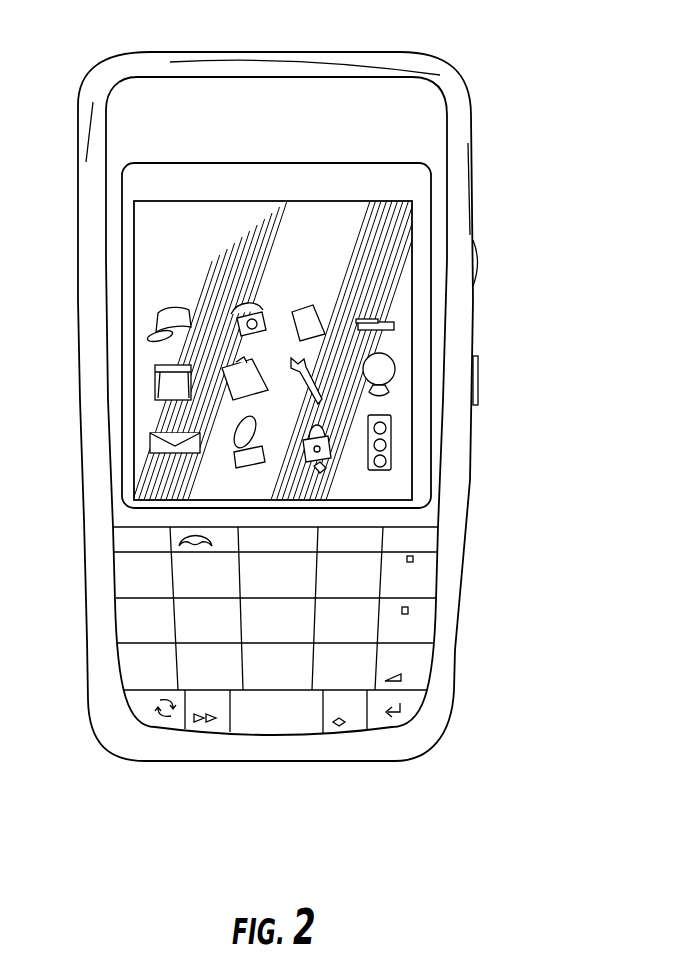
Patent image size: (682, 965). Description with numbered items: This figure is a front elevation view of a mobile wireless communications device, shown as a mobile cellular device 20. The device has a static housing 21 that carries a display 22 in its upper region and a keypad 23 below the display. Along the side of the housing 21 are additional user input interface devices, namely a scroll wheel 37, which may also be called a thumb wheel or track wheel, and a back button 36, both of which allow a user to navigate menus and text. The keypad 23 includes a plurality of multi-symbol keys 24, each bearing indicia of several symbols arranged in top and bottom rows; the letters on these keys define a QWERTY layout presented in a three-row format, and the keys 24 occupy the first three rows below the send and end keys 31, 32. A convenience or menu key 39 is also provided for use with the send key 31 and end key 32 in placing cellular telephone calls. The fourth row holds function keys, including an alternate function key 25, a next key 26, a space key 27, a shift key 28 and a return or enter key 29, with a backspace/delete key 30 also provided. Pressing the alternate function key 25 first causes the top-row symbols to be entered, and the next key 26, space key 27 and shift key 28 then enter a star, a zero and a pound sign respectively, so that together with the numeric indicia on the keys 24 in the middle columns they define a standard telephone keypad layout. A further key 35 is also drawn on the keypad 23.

The mobile cellular device 20 is at (513, 52).
The housing 21 is at (118, 78).
The display 22 is at (145, 282).
The keypad 23 is at (443, 575).
The multi-symbol keys 24 is at (130, 618).
The alternate function key 25 is at (147, 712).
The next key 26 is at (188, 725).
The space key 27 is at (252, 730).
The shift key 28 is at (353, 728).
The return key 29 is at (407, 703).
The backspace/delete key 30 is at (417, 667).
The send key 31 is at (182, 548).
The end key 32 is at (360, 548).
The key 35 is at (423, 623).
The back button 36 is at (478, 378).
The scroll wheel 37 is at (481, 258).
The convenience key 39 is at (297, 553).